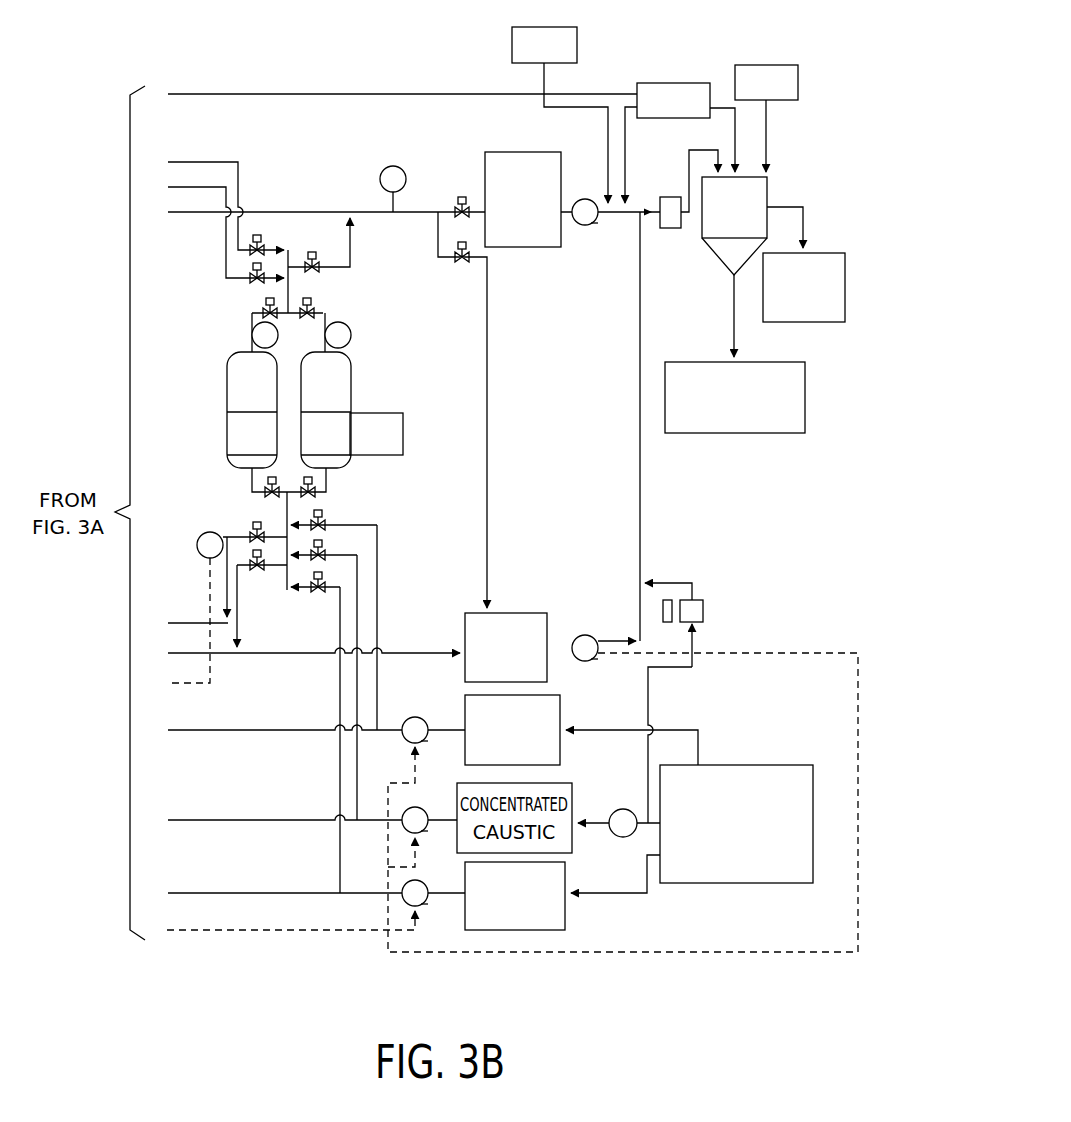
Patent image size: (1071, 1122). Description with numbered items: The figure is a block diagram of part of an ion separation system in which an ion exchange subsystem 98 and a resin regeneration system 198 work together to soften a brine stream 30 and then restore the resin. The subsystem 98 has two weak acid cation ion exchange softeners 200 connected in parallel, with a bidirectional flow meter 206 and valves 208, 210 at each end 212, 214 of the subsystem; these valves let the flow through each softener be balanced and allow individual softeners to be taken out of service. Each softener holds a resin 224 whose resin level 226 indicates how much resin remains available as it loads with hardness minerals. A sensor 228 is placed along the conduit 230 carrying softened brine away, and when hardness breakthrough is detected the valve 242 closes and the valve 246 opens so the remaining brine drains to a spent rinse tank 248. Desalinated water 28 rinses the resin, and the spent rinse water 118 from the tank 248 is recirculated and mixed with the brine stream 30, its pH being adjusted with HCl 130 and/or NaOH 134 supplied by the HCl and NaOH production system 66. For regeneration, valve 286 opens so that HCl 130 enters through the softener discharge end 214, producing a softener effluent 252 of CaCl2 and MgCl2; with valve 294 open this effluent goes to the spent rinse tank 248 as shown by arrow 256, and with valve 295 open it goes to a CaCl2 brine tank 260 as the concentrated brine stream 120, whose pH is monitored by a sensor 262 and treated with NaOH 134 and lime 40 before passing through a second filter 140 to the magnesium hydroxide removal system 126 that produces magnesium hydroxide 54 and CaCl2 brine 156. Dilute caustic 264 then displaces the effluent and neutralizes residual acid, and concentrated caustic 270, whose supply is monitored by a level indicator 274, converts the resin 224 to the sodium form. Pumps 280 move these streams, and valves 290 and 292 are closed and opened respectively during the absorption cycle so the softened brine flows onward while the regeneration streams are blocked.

The desalinated water 28 is at (228, 235).
The brine stream 30 is at (240, 162).
The lime source 40 is at (512, 45).
The magnesium hydroxide 54 is at (735, 433).
The HCl and NaOH production system 66 is at (750, 765).
The ion exchange subsystem 98 is at (388, 318).
The spent rinse water 118 is at (640, 440).
The concentrated brine stream 120 is at (477, 197).
The magnesium hydroxide removal system 126 is at (770, 185).
The HCl 130 is at (378, 600).
The NaOH 134 is at (668, 83).
The second filter 140 is at (672, 228).
The CaCl2 brine 156 is at (820, 322).
The resin regeneration system 198 is at (240, 936).
The ion exchange softener 200 is at (227, 374).
The bidirectional flow meter 206 is at (252, 335).
The valve 208 is at (307, 308).
The valve 210 is at (305, 494).
The end 212 is at (368, 346).
The softener discharge end 214 is at (352, 465).
The resin 224 is at (357, 422).
The resin level 226 is at (403, 441).
The sensor 228 is at (203, 557).
The conduit 230 is at (280, 533).
The valve 242 is at (250, 533).
The valve 246 is at (264, 571).
The spent rinse tank 248 is at (517, 612).
The softener effluent 252 is at (330, 250).
The arrow 256 is at (490, 332).
The CaCl2 brine tank 260 is at (545, 152).
The sensor 262 is at (390, 166).
The dilute caustic 264 is at (333, 783).
The concentrated caustic 270 is at (697, 583).
The level indicator 274 is at (626, 838).
The pump 280 is at (585, 199).
The valve 286 is at (328, 580).
The valve 290 is at (251, 272).
The valve 292 is at (258, 240).
The valve 294 is at (312, 252).
The valve 295 is at (420, 195).